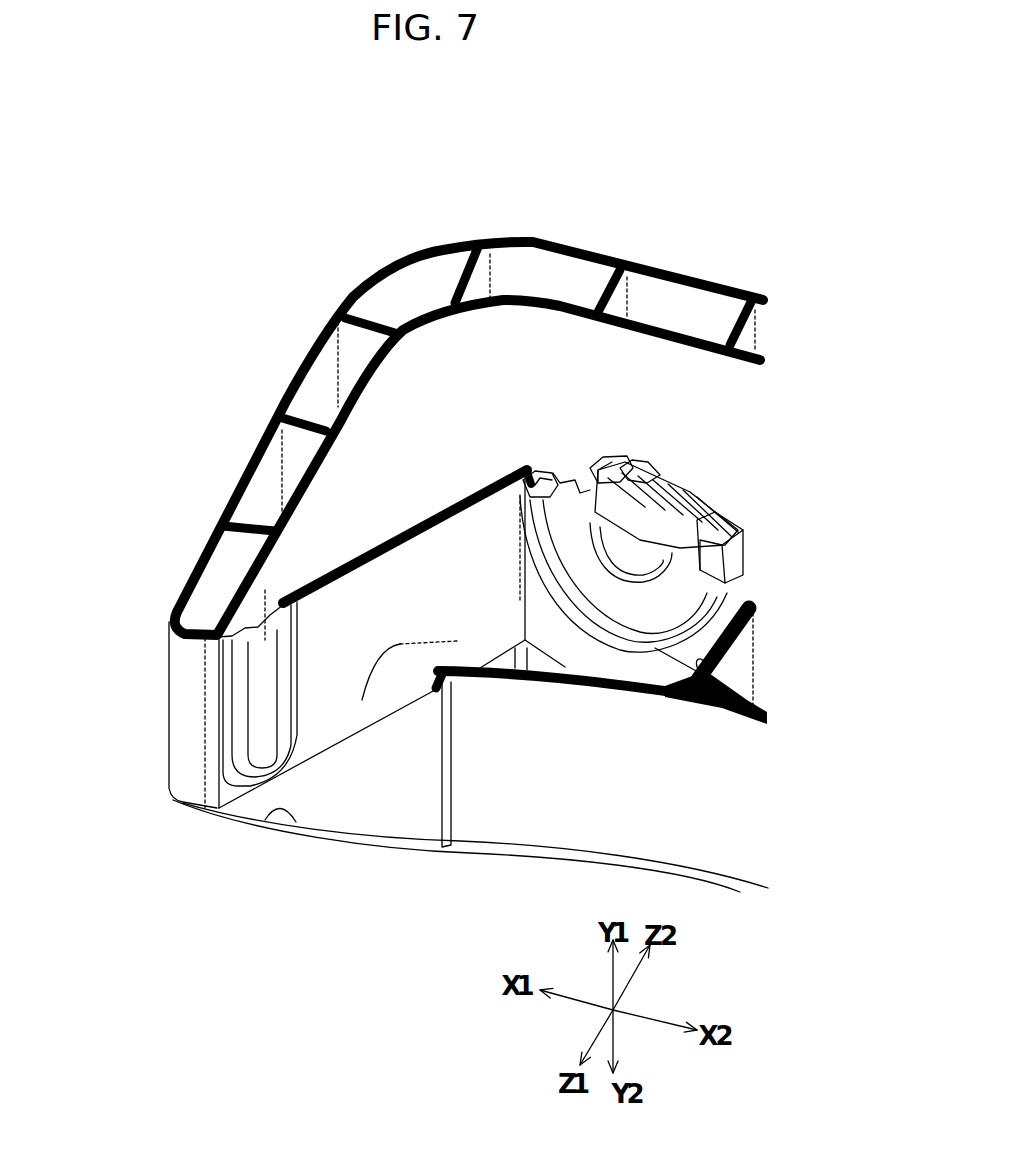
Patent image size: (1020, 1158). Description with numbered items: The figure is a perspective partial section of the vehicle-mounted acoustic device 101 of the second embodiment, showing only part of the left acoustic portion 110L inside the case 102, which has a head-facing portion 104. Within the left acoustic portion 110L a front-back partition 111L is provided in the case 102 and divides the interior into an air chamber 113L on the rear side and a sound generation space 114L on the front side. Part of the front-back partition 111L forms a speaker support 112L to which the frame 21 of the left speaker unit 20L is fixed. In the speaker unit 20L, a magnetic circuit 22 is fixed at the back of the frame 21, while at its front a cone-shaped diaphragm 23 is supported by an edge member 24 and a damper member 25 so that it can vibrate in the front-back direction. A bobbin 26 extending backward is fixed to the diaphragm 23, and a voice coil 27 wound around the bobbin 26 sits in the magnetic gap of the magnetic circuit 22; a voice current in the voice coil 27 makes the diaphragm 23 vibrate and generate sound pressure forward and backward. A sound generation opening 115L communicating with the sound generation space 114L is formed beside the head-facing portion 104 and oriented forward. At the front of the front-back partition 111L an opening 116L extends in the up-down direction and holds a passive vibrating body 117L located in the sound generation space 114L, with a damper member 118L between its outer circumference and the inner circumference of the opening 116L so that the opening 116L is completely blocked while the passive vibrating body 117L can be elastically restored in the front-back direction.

The vehicle-mounted acoustic device 101 is at (330, 185).
The case 102 is at (314, 330).
The head-facing portion 104 is at (555, 795).
The left acoustic portion 110L is at (792, 256).
The front-back partition 111L is at (427, 553).
The speaker support 112L is at (525, 466).
The air chamber 113L is at (503, 380).
The sound generation space 114L is at (362, 700).
The sound generation opening 115L is at (265, 805).
The opening 116L is at (215, 537).
The passive vibrating body 117L is at (260, 652).
The damper member 118L is at (240, 703).
The speaker unit 20L is at (703, 460).
The frame 21 is at (543, 487).
The magnetic circuit 22 is at (703, 513).
The diaphragm 23 is at (608, 575).
The edge member 24 is at (556, 548).
The damper member 25 is at (680, 596).
The bobbin 26 is at (640, 487).
The voice coil 27 is at (640, 478).